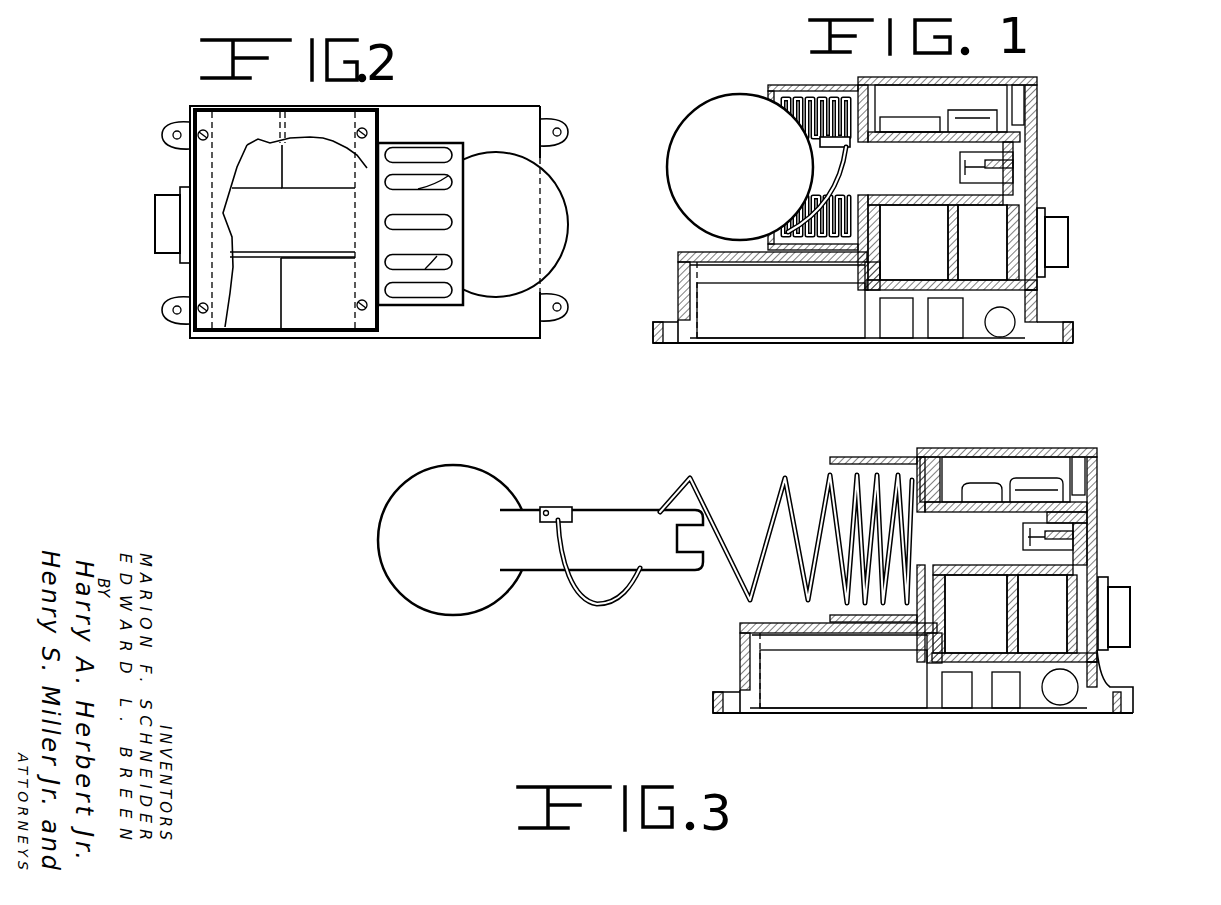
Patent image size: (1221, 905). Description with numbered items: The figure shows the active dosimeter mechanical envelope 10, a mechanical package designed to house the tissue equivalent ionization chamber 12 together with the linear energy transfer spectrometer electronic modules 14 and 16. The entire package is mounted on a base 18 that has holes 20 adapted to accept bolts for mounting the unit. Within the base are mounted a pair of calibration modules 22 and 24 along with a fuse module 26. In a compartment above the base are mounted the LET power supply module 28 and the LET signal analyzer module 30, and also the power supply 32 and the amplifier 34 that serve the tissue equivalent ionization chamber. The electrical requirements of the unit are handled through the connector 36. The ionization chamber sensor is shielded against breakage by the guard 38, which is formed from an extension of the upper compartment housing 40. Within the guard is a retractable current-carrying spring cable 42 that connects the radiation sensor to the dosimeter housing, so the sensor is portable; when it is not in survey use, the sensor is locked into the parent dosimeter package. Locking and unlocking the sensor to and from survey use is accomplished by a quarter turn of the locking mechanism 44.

In FIG. 2, the active dosimeter mechanical envelope 10 is at (346, 247).
In FIG. 1, the active dosimeter mechanical envelope 10 is at (871, 214).
In FIG. 3, the active dosimeter mechanical envelope 10 is at (775, 577).
In FIG. 2, the tissue equivalent ionization chamber 12 is at (547, 170).
In FIG. 1, the tissue equivalent ionization chamber 12 is at (682, 217).
In FIG. 3, the tissue equivalent ionization chamber 12 is at (487, 468).
In FIG. 1, the linear energy transfer spectrometer electronic module 14 is at (800, 332).
In FIG. 3, the linear energy transfer spectrometer electronic module 14 is at (830, 700).
In FIG. 1, the linear energy transfer spectrometer electronic module 16 is at (697, 287).
In FIG. 3, the linear energy transfer spectrometer electronic module 16 is at (770, 658).
In FIG. 2, the base 18 is at (180, 327).
In FIG. 1, the base 18 is at (1038, 300).
In FIG. 3, the base 18 is at (1100, 680).
In FIG. 2, the holes 20 is at (162, 142).
In FIG. 1, the holes 20 is at (1053, 322).
In FIG. 3, the holes 20 is at (1127, 717).
In FIG. 1, the calibration module 22 is at (890, 333).
In FIG. 3, the calibration module 22 is at (955, 705).
In FIG. 1, the calibration module 24 is at (955, 333).
In FIG. 3, the calibration module 24 is at (1010, 703).
In FIG. 1, the fuse module 26 is at (1007, 323).
In FIG. 3, the fuse module 26 is at (1060, 703).
In FIG. 2, the LET power supply module 28 is at (313, 167).
In FIG. 1, the LET power supply module 28 is at (895, 241).
In FIG. 3, the LET power supply module 28 is at (964, 623).
In FIG. 2, the LET signal analyzer module 30 is at (253, 173).
In FIG. 1, the LET signal analyzer module 30 is at (969, 241).
In FIG. 3, the LET signal analyzer module 30 is at (1032, 623).
In FIG. 2, the power supply 32 is at (245, 330).
In FIG. 1, the power supply 32 is at (903, 118).
In FIG. 3, the power supply 32 is at (972, 493).
In FIG. 2, the amplifier 34 is at (293, 328).
In FIG. 1, the amplifier 34 is at (973, 123).
In FIG. 3, the amplifier 34 is at (1038, 493).
In FIG. 2, the connector 36 is at (155, 223).
In FIG. 1, the connector 36 is at (1068, 243).
In FIG. 3, the connector 36 is at (1133, 633).
In FIG. 2, the guard 38 is at (410, 143).
In FIG. 1, the guard 38 is at (813, 85).
In FIG. 3, the guard 38 is at (835, 457).
In FIG. 2, the upper compartment housing 40 is at (227, 125).
In FIG. 1, the upper compartment housing 40 is at (877, 78).
In FIG. 3, the upper compartment housing 40 is at (925, 448).
In FIG. 1, the spring cable 42 is at (773, 86).
In FIG. 3, the spring cable 42 is at (703, 476).
In FIG. 1, the locking mechanism 44 is at (1013, 162).
In FIG. 3, the locking mechanism 44 is at (1080, 537).